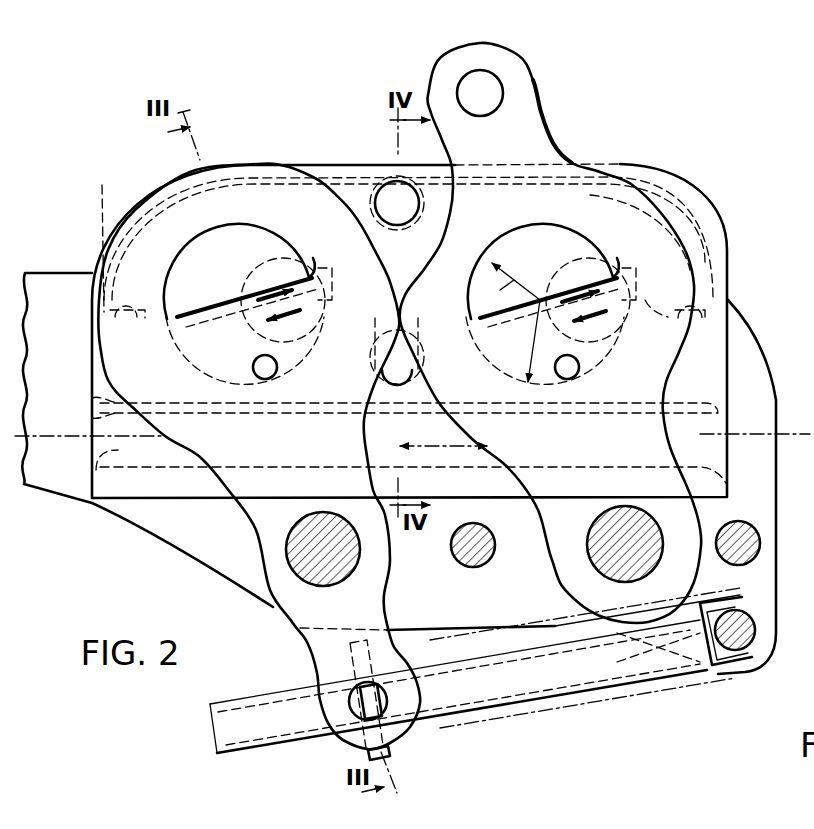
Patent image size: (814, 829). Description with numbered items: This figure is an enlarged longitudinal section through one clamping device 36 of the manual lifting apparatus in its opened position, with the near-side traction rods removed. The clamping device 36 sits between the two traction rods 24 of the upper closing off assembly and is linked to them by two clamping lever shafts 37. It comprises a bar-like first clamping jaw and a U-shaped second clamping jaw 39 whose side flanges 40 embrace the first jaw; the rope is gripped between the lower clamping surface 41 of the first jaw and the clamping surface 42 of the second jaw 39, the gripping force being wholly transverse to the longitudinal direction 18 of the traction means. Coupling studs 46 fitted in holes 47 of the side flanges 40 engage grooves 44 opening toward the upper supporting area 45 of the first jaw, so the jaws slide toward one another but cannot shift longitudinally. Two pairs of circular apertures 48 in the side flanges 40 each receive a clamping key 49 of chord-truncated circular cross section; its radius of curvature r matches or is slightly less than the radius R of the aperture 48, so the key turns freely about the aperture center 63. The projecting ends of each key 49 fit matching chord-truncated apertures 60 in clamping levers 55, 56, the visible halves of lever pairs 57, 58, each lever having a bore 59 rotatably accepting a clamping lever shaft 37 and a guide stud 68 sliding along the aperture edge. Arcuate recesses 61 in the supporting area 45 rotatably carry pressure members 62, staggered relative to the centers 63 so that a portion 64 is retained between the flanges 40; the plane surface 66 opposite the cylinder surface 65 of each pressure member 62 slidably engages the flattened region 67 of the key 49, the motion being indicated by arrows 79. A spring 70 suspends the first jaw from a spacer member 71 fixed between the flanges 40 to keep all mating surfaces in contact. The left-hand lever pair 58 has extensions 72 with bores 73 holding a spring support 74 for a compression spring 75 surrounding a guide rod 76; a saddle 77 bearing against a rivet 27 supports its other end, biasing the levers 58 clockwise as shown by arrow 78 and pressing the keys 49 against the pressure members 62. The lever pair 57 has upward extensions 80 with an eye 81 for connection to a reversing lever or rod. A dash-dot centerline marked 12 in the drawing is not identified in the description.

The longitudinal axis 12 is at (790, 437).
The longitudinal direction 18 is at (440, 455).
The traction rods 24 is at (53, 283).
The rivet 27 is at (472, 567).
The clamping device 36 is at (633, 141).
The clamping lever shafts 37 is at (300, 583).
The second clamping jaw 39 is at (733, 358).
The side flanges 40 is at (722, 244).
The lower clamping surface 41 is at (92, 413).
The clamping surface 42 is at (125, 470).
The grooves 44 is at (410, 385).
The upper supporting area 45 is at (700, 300).
The coupling studs 46 is at (403, 355).
The holes 47 is at (376, 373).
The circular apertures 48 is at (178, 346).
The clamping key 49 is at (243, 232).
The clamping lever 55 is at (668, 246).
The clamping lever 56 is at (257, 528).
The clamping lever pair 57 is at (548, 100).
The clamping lever pair 58 is at (300, 641).
The bore 59 is at (305, 566).
The chord truncated circular apertures 60 is at (190, 257).
The arcuate recesses 61 is at (318, 326).
The pressure member 62 is at (323, 290).
The centers 63 is at (240, 308).
The portion 64 is at (333, 298).
The cylinder surface 65 is at (643, 294).
The plane surface 66 is at (316, 268).
The flattened region 67 is at (222, 312).
The guide studs 68 is at (277, 371).
The spring 70 is at (672, 203).
The spacer member 71 is at (392, 198).
The extensions 72 is at (350, 740).
The bores 73 is at (385, 698).
The spring support 74 is at (360, 708).
The compression spring 75 is at (495, 718).
The guide rod 76 is at (570, 690).
The saddle 77 is at (705, 665).
The arrow 78 is at (297, 260).
The arrows 79 is at (270, 287).
The extensions 80 is at (502, 60).
The eye 81 is at (505, 88).
The radius R is at (505, 343).
The radius of curvature r is at (514, 281).